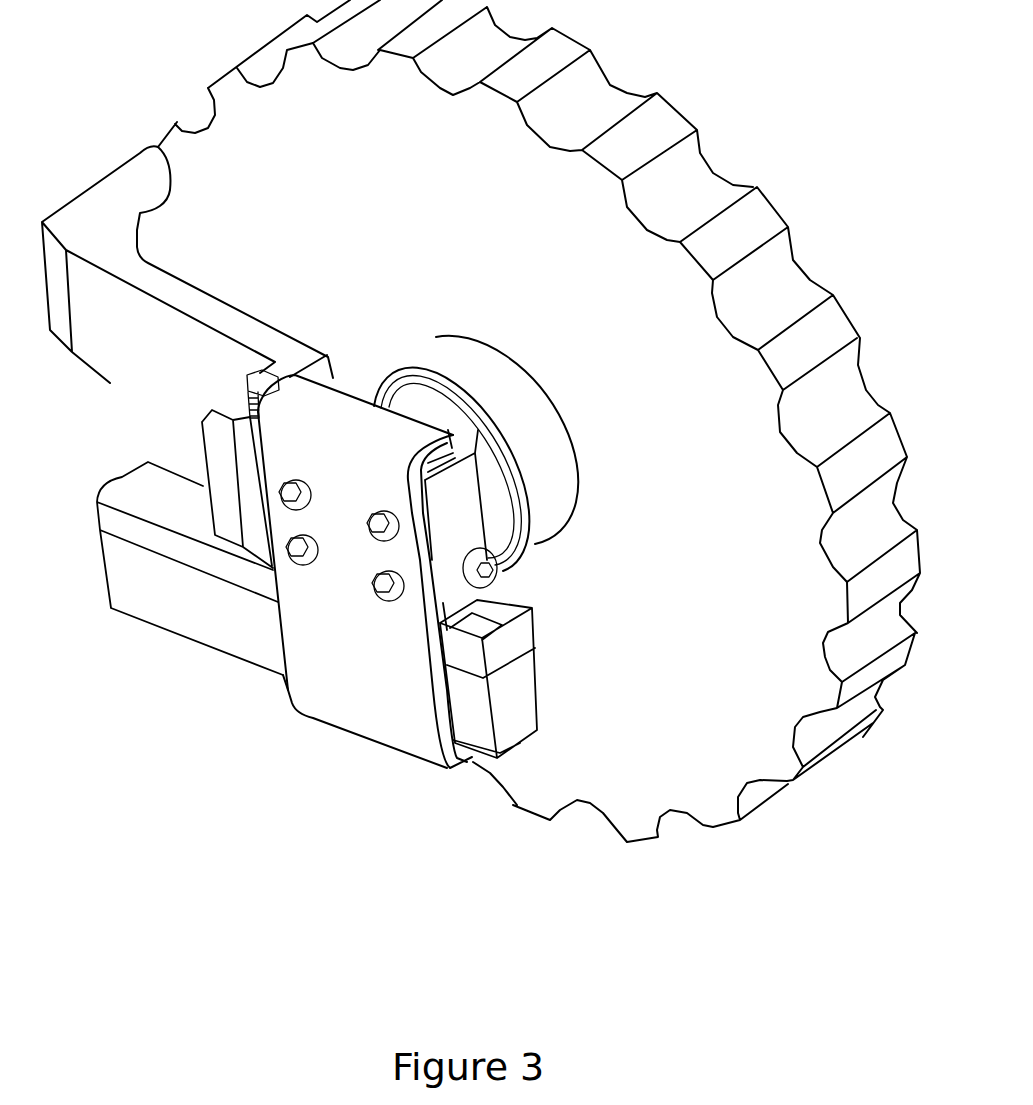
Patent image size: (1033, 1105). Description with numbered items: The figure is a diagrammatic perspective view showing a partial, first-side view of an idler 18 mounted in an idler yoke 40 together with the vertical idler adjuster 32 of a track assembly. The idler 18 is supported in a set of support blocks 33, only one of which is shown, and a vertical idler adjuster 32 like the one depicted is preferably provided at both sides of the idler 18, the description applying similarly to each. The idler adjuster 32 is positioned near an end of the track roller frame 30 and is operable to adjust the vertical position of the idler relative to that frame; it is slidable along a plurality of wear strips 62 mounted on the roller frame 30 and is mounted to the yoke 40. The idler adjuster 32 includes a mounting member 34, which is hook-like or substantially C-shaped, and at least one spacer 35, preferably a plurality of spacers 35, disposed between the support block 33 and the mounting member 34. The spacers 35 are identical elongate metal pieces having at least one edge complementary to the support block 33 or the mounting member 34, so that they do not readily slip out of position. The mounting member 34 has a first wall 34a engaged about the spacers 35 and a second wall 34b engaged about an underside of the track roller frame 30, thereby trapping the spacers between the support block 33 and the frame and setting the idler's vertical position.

The idler 18 is at (711, 200).
The track roller frame 30 is at (159, 655).
The vertical idler adjuster 32 is at (313, 737).
The support block 33 is at (461, 516).
The mounting member 34 is at (382, 663).
The first wall 34a is at (435, 447).
The second wall 34b is at (457, 760).
The spacer 35 is at (240, 380).
The idler yoke 40 is at (105, 200).
The wear strips 62 is at (483, 677).